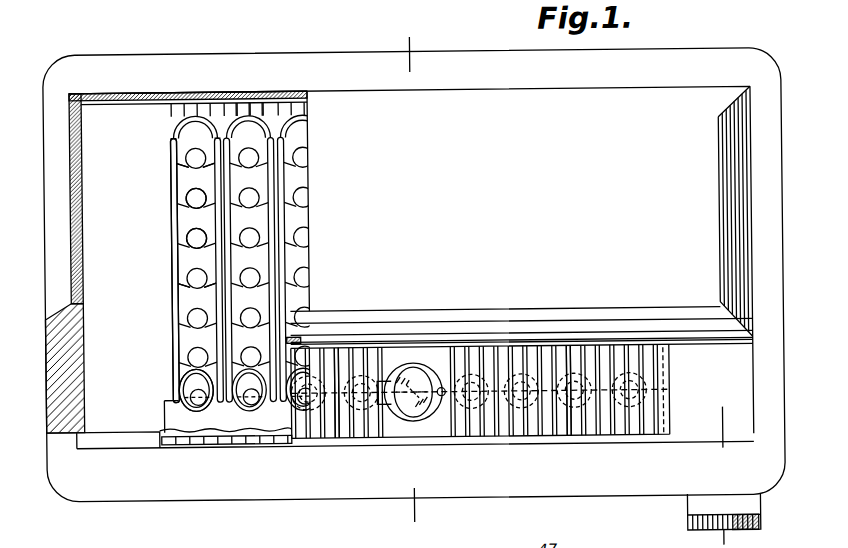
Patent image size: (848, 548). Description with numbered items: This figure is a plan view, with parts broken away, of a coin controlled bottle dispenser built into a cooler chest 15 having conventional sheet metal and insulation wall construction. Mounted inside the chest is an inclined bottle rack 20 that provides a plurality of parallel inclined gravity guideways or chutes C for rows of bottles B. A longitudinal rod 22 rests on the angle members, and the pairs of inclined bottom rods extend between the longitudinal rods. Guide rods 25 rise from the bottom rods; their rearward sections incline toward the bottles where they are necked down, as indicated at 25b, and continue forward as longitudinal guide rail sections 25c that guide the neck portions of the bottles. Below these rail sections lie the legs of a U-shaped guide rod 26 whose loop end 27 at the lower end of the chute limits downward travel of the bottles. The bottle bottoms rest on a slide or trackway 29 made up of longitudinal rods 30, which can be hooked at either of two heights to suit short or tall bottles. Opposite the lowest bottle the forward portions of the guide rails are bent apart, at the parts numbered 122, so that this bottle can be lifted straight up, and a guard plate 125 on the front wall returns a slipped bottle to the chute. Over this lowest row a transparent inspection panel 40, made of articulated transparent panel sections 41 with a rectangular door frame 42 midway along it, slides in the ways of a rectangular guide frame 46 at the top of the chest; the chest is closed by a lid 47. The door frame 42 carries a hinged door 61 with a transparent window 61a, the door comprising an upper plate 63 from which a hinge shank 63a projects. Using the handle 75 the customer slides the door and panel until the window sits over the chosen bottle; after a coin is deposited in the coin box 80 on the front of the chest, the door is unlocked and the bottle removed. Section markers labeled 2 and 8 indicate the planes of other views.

The cooler chest 15 is at (722, 49).
The inclined bottle rack 20 is at (166, 151).
The longitudinal rod 22 is at (178, 97).
The slide or trackway 29 is at (250, 101).
The longitudinal rods 30 is at (266, 100).
The guide rods 25 is at (231, 295).
The inclined portion of rearward guide rod section 25b is at (210, 134).
The longitudinal guide rail sections 25c is at (183, 168).
The bottles B is at (188, 198).
The gravity guideways or chutes C is at (247, 256).
The U-shaped guide rod 26 is at (180, 238).
The bent-apart forward guide rod portions 122 is at (177, 389).
The guard plate 125 is at (164, 419).
The loop end 27 is at (252, 408).
The rectangular guide frame 46 is at (237, 446).
The transparent panel sections 41 is at (336, 434).
The transparent inspection panel 40 is at (591, 423).
The door frame 42 is at (392, 353).
The lid 47 is at (503, 201).
The upper door plate 63 is at (431, 364).
The hinge shank 63a is at (405, 405).
The hinged door 61 is at (426, 409).
The transparent window 61a is at (388, 413).
The handle 75 is at (447, 397).
The coin box 80 is at (685, 520).
The section line 2- 2 is at (412, 37).
The section line 8- 8 is at (721, 410).